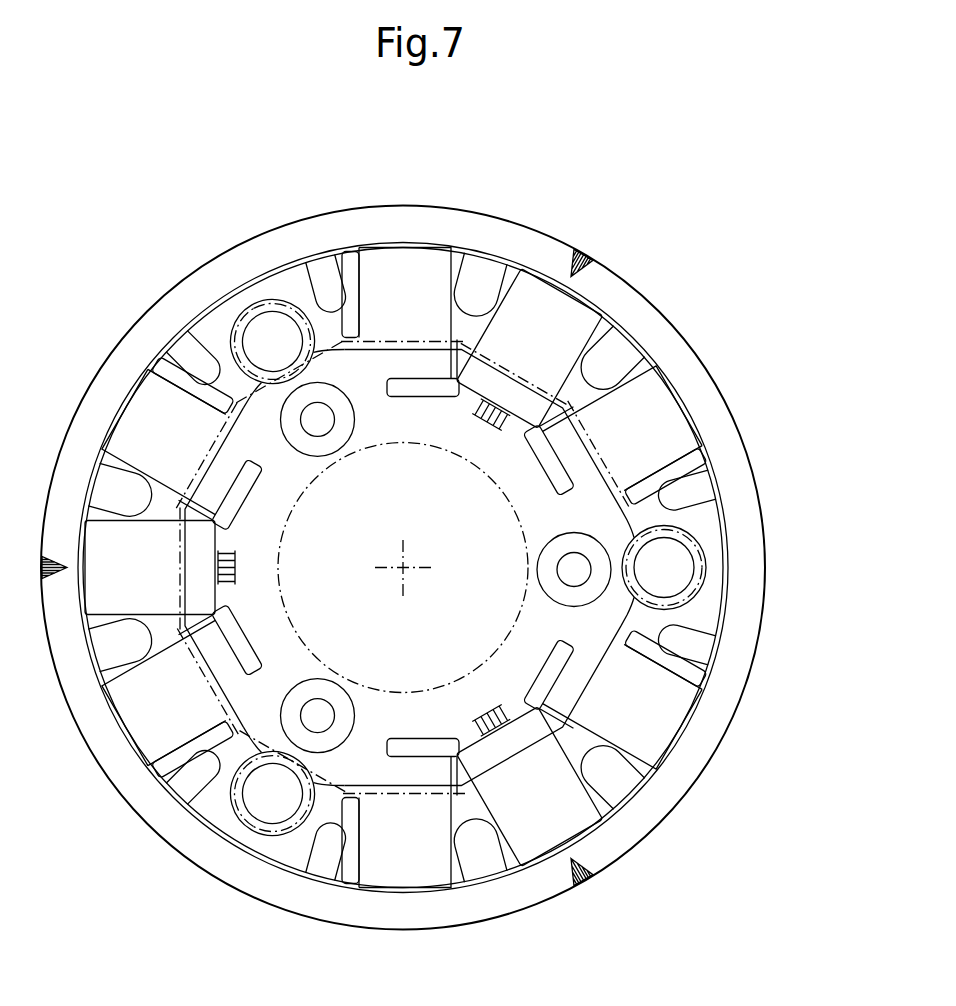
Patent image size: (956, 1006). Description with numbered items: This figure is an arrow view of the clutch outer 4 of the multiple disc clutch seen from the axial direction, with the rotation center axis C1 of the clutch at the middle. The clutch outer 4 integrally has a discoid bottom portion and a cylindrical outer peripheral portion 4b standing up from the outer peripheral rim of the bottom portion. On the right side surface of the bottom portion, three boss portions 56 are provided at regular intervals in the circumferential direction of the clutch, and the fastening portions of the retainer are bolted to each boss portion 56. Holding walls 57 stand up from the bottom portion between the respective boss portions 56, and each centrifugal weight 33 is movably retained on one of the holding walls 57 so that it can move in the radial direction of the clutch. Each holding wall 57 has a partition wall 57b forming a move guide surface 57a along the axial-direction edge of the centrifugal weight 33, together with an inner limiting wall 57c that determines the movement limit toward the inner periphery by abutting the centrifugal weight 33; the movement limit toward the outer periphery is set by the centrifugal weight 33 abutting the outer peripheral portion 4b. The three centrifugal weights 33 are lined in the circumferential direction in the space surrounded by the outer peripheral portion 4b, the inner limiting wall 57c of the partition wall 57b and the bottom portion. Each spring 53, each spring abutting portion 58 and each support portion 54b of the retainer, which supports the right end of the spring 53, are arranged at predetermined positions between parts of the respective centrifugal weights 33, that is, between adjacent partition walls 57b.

The clutch outer 4 is at (490, 203).
The outer peripheral portion 4b is at (581, 252).
The centrifugal weight 33 is at (670, 377).
The spring 53 is at (255, 308).
The support portion 54b is at (461, 568).
The spring abutting portion 58 is at (463, 567).
The boss portion 56 is at (328, 448).
The holding wall 57 is at (444, 280).
The move guide surface 57a is at (402, 242).
The partition wall 57b is at (342, 262).
The inner limiting wall 57c is at (468, 410).
The rotation center axis C1 is at (415, 556).